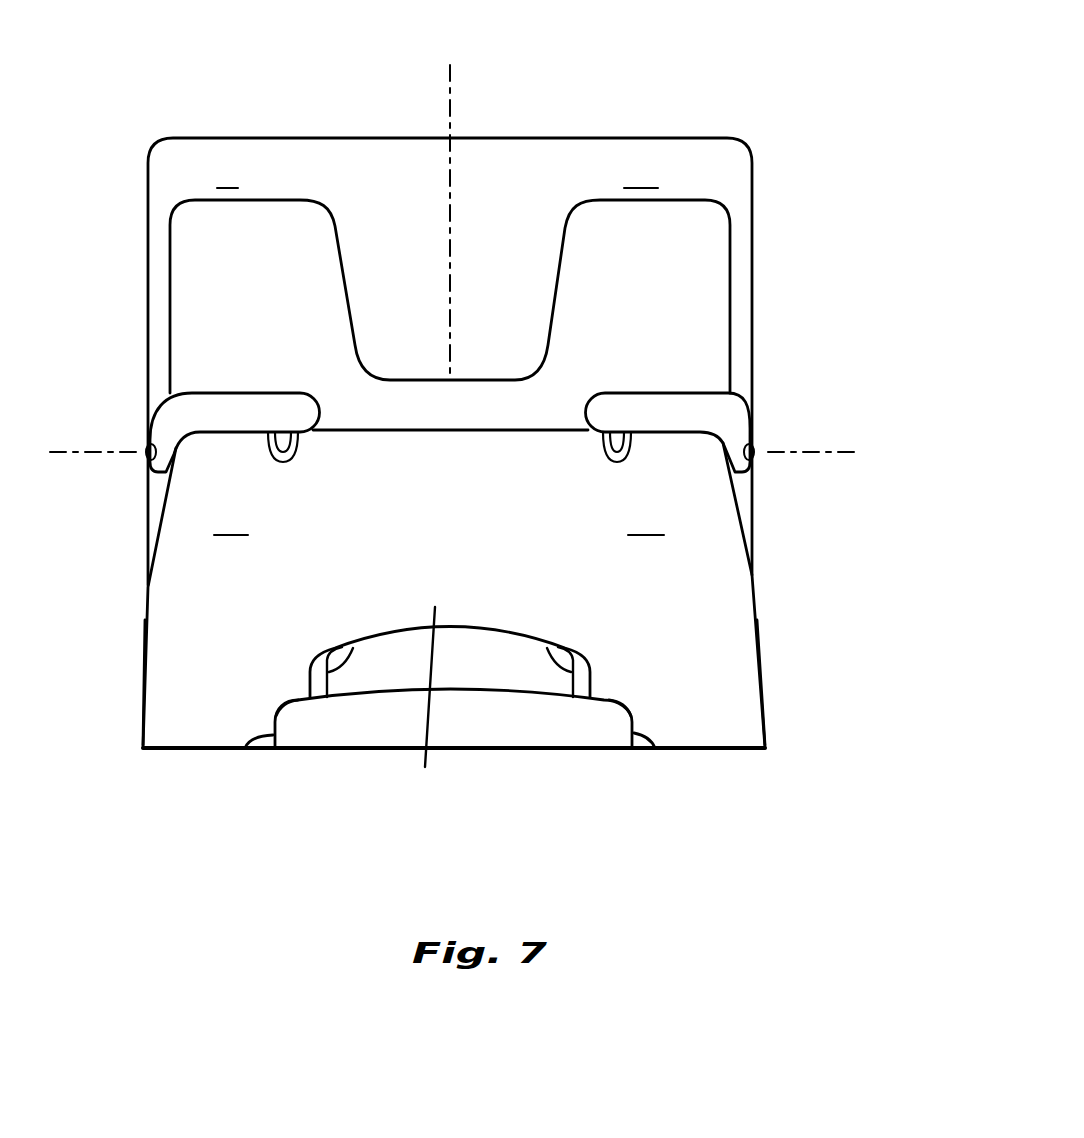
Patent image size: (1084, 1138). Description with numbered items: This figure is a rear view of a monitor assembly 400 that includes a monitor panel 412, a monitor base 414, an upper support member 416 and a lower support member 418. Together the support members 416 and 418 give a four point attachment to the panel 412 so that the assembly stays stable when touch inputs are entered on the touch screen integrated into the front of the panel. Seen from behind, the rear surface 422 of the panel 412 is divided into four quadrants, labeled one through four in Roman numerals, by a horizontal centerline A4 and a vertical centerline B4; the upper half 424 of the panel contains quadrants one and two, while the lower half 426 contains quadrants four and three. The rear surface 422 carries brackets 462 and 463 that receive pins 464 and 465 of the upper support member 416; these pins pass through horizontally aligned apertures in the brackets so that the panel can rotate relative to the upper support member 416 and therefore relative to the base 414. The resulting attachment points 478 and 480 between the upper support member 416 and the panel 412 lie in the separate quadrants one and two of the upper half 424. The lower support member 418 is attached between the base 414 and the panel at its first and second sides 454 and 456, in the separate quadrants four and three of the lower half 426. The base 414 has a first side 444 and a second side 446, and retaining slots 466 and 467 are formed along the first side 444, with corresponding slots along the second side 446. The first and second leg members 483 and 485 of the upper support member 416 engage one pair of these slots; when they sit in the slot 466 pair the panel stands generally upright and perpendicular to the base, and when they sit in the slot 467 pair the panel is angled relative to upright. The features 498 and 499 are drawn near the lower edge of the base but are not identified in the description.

The monitor assembly 400 is at (678, 86).
The monitor panel 412 is at (210, 137).
The rear surface 422 is at (518, 166).
The upper half 424 is at (830, 285).
The lower half 426 is at (830, 618).
The bracket 462 is at (190, 400).
The bracket 463 is at (708, 400).
The pin 464 is at (147, 446).
The pin 465 is at (758, 450).
The attachment point 478 is at (172, 466).
The attachment point 480 is at (752, 452).
The first leg member 483 is at (160, 681).
The second leg member 485 is at (743, 708).
The left bottom edge 498 is at (168, 751).
The right bottom edge 499 is at (715, 751).
The monitor base 414 is at (528, 737).
The upper support member 416 is at (428, 710).
The lower support member 418 is at (508, 645).
The first side 454 is at (350, 660).
The second side 456 is at (553, 650).
The retaining slot 466 is at (297, 700).
The retaining slot 467 is at (605, 702).
The first side 444 is at (247, 751).
The second side 446 is at (657, 751).
The horizontal centerline A4 is at (832, 452).
The vertical centerline B4 is at (452, 84).